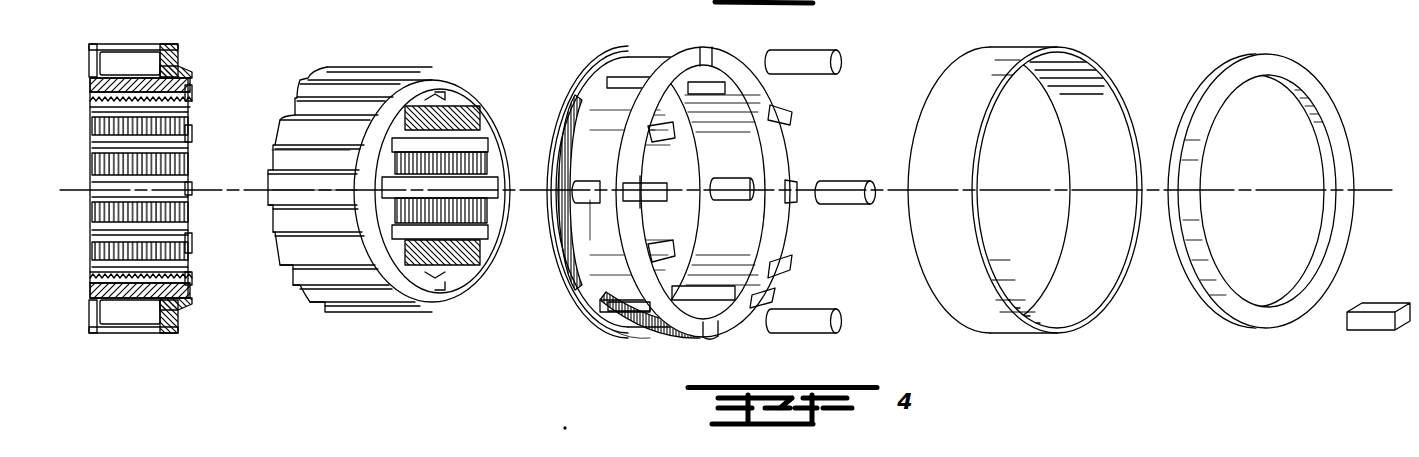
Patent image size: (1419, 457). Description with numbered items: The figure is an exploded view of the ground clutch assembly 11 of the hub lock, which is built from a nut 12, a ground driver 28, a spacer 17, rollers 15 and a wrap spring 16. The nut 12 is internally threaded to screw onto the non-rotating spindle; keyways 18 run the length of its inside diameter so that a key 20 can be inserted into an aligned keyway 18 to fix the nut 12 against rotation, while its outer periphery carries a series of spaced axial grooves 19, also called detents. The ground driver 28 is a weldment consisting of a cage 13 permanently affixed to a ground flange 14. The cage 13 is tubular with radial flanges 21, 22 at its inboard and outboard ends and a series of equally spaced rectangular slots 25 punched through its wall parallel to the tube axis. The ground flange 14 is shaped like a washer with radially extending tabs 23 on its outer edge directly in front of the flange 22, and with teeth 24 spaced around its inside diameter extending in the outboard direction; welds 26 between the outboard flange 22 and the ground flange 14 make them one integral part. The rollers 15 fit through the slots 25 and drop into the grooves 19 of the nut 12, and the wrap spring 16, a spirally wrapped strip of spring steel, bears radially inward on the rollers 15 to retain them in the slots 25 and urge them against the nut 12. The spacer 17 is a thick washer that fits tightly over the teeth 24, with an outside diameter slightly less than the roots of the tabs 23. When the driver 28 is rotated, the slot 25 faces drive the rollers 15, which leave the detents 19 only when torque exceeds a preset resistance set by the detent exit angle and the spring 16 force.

The ground clutch assembly 11 is at (134, 340).
The nut 12 is at (302, 73).
The cage 13 is at (592, 75).
The ground flange 14 is at (768, 113).
The rollers 15 is at (145, 62).
The wrap spring 16 is at (127, 47).
The spacer 17 is at (1268, 55).
The keyways 18 is at (470, 105).
The grooves 19 is at (276, 212).
The key 20 is at (1368, 307).
The radial flange 21 is at (628, 338).
The radial flange 22 is at (702, 336).
The tabs 23 is at (708, 48).
The teeth 24 is at (192, 77).
The rectangular slots 25 is at (748, 183).
The welds 26 is at (697, 337).
The ground driver 28 is at (592, 250).